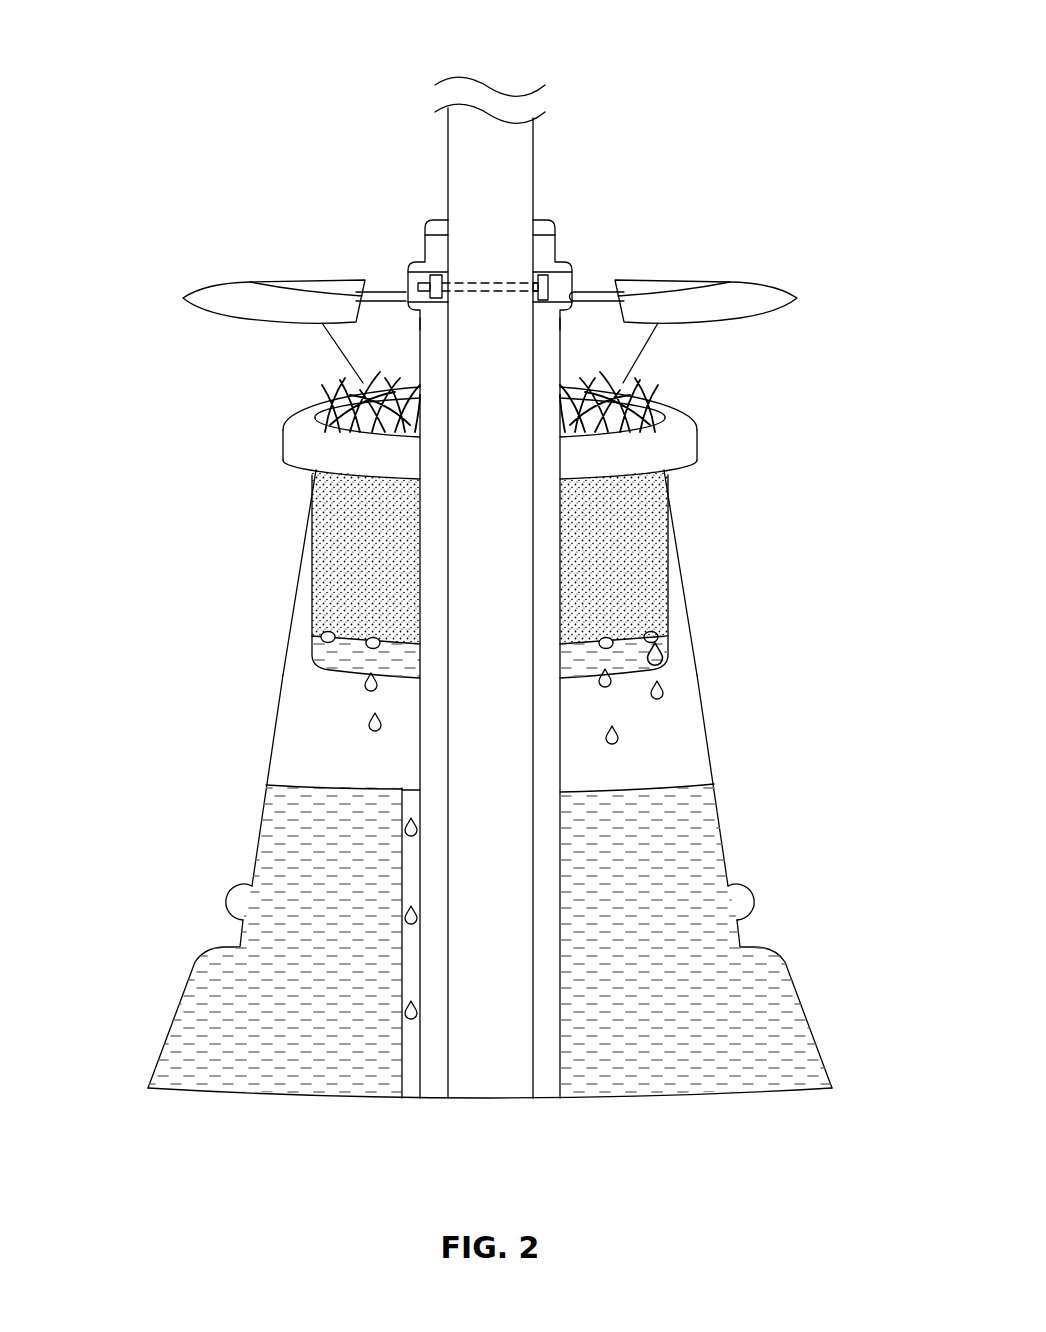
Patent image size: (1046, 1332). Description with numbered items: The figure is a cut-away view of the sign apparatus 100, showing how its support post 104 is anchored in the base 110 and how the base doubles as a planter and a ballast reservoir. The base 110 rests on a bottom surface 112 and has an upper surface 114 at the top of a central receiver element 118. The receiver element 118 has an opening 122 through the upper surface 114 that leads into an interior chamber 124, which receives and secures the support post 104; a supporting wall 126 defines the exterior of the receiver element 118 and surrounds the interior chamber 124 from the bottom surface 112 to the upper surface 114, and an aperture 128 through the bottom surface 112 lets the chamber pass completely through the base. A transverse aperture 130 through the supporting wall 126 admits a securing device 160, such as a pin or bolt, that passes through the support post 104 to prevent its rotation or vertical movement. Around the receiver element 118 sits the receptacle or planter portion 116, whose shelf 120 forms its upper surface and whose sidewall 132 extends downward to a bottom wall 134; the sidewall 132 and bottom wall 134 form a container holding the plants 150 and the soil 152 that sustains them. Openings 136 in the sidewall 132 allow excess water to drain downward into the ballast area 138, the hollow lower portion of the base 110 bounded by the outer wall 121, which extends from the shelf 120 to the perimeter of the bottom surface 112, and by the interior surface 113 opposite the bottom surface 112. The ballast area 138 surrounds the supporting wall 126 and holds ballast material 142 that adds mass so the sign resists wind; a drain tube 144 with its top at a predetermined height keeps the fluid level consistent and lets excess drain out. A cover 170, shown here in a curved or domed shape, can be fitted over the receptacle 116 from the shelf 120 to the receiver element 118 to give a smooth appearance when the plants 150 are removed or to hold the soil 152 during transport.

The sign apparatus 100 is at (131, 44).
The support post 104 is at (477, 768).
The base 110 is at (229, 902).
The bottom surface 112 is at (641, 1100).
The interior surface 113 is at (748, 1090).
The upper surface 114 is at (541, 224).
The receptacle or planter portion 116 is at (335, 498).
The receiver element 118 is at (442, 328).
The shelf 120 is at (315, 437).
The outer wall 121 is at (190, 965).
The opening 122 is at (462, 217).
The interior chamber 124 is at (533, 908).
The supporting wall 126 is at (542, 983).
The aperture 128 is at (491, 1096).
The aperture 130 is at (422, 272).
The sidewall 132 is at (310, 543).
The bottom wall 134 is at (606, 682).
The openings 136 is at (655, 628).
The ballast area 138 is at (292, 748).
The ballast material 142 is at (667, 970).
The drain tube 144 is at (400, 875).
The plants 150 is at (358, 385).
The soil 152 is at (618, 575).
The securing device 160 is at (505, 282).
The cover 170 is at (768, 297).